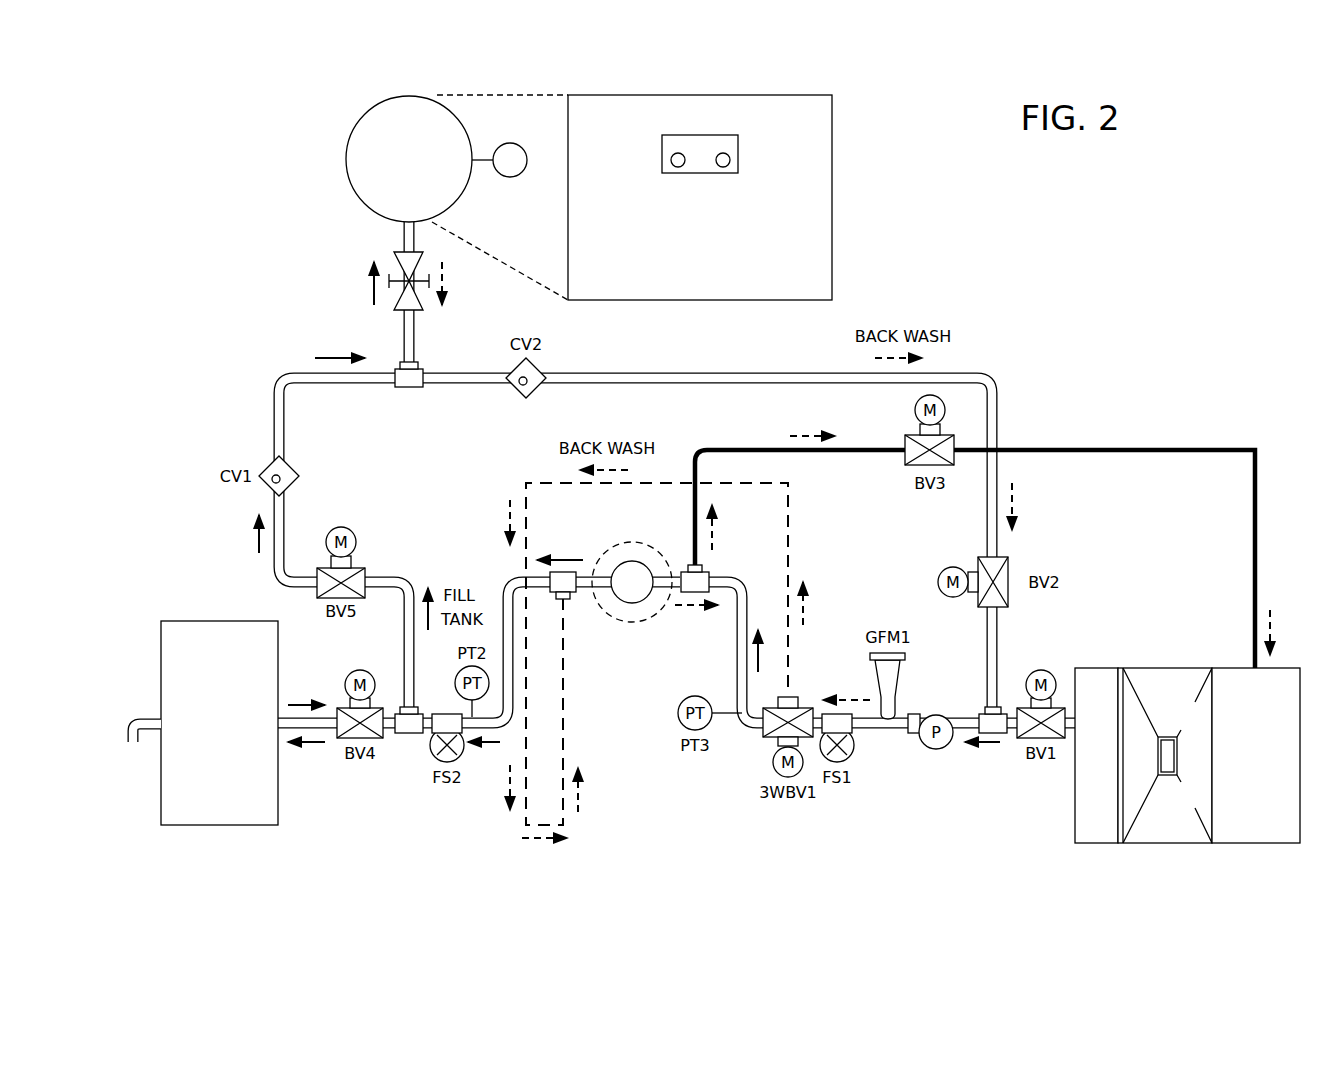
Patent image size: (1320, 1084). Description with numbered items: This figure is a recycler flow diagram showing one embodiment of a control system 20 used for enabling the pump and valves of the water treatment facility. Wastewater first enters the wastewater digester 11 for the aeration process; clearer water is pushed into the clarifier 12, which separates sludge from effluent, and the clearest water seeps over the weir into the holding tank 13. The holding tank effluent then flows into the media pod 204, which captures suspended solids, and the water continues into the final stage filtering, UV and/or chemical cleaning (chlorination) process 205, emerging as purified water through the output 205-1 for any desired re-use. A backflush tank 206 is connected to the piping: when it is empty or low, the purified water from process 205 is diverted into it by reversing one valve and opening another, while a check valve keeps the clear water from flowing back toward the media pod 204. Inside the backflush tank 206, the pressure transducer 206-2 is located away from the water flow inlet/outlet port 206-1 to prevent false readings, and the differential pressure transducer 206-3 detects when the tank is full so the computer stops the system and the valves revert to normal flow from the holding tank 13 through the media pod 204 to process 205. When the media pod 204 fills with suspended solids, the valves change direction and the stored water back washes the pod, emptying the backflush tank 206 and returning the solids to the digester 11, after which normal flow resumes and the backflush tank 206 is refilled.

The control system 20 is at (1038, 196).
The media pod 204 is at (632, 622).
The final stage filtering, UV and/or chemical cleaning (chlorination) process 205 is at (218, 825).
The output 205-1 is at (140, 718).
The backflush tank 206 is at (345, 152).
The water flow inlet/outlet port 206-1 is at (723, 167).
The pressure transducer 206-2 is at (678, 167).
The differential pressure transducer 206-3 is at (394, 302).
The wastewater digester 11 is at (1255, 843).
The clarifier 12 is at (1168, 843).
The holding tank 13 is at (1104, 843).